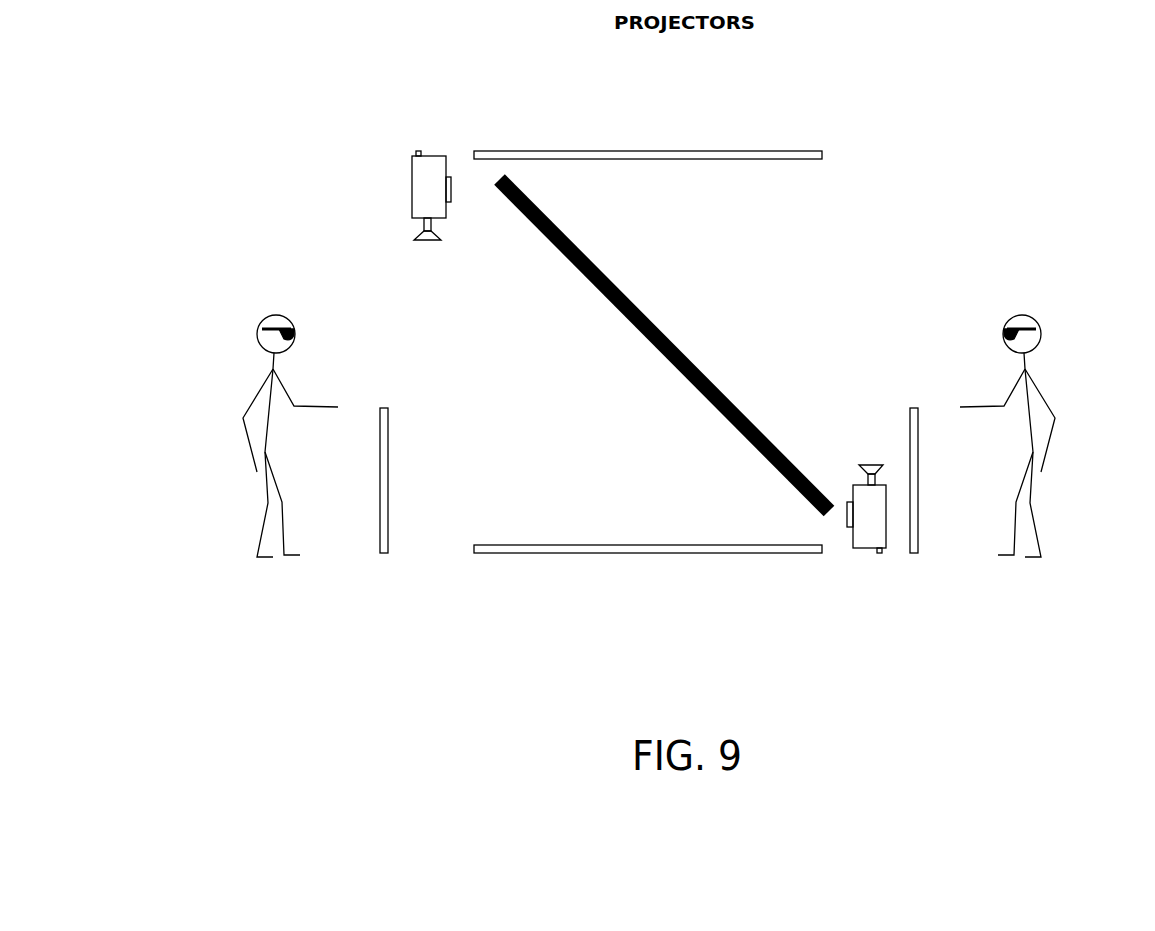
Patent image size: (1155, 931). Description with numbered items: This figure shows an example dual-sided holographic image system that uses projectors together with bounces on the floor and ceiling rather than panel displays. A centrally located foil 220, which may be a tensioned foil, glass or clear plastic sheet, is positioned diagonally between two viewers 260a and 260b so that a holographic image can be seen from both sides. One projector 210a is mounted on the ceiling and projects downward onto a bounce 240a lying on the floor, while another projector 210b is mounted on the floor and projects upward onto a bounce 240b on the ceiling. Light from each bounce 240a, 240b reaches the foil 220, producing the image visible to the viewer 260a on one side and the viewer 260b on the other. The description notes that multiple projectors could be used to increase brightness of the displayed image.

The projector 210a is at (432, 149).
The projector 210b is at (871, 563).
The foil 220 is at (661, 325).
The bounce 240a is at (726, 563).
The bounce 240b is at (727, 141).
The viewer 260a is at (243, 383).
The viewer 260b is at (1056, 383).